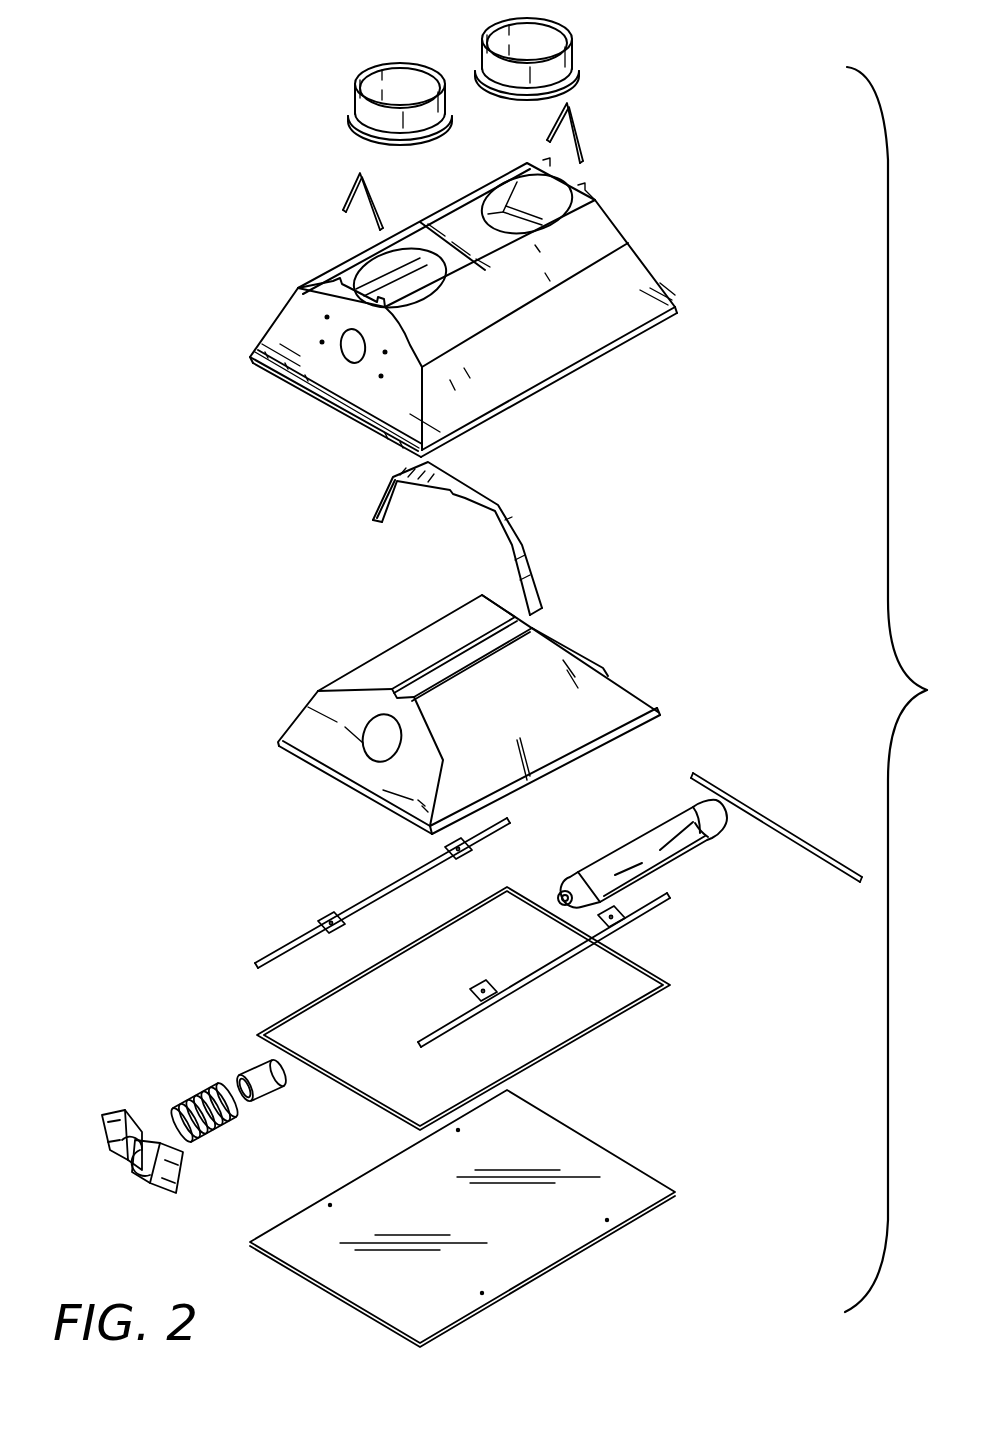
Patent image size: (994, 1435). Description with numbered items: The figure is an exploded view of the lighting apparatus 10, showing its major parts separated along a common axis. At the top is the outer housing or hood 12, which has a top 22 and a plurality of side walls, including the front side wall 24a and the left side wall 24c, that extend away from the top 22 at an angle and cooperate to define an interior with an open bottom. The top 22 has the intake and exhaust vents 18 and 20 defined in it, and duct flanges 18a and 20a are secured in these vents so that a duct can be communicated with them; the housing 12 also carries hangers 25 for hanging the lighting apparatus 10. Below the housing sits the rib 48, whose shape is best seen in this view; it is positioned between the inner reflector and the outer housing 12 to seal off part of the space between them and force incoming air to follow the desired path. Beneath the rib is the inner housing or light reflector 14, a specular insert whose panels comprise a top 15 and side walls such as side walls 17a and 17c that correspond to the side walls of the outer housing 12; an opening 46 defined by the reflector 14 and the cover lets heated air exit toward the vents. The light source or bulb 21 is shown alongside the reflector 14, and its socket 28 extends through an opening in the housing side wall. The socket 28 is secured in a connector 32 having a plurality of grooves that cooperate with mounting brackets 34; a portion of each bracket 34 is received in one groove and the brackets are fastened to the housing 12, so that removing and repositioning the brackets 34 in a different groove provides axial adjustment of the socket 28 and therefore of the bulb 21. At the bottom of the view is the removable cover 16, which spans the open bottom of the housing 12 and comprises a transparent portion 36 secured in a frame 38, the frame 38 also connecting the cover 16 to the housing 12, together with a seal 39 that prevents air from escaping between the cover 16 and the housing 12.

The lighting apparatus 10 is at (153, 70).
The outer housing 12 is at (303, 313).
The inner housing 14 is at (375, 671).
The top 15 is at (462, 657).
The cover 16 is at (178, 913).
The side wall 17a is at (626, 697).
The side wall 17c is at (377, 778).
The intake vent 18 is at (500, 198).
The duct flange 18a is at (563, 70).
The exhaust vent 20 is at (390, 260).
The duct flange 20a is at (367, 120).
The light source 21 is at (627, 857).
The top 22 is at (588, 205).
The front side wall 24a is at (634, 283).
The left side wall 24c is at (369, 410).
The hangers 25 is at (576, 128).
The socket 28 is at (350, 348).
The connector 32 is at (198, 1097).
The mounting brackets 34 is at (118, 1112).
The transparent portion 36 is at (633, 1193).
The frame 38 is at (773, 823).
The seal 39 is at (643, 1002).
The opening 46 is at (327, 763).
The rib 48 is at (511, 521).